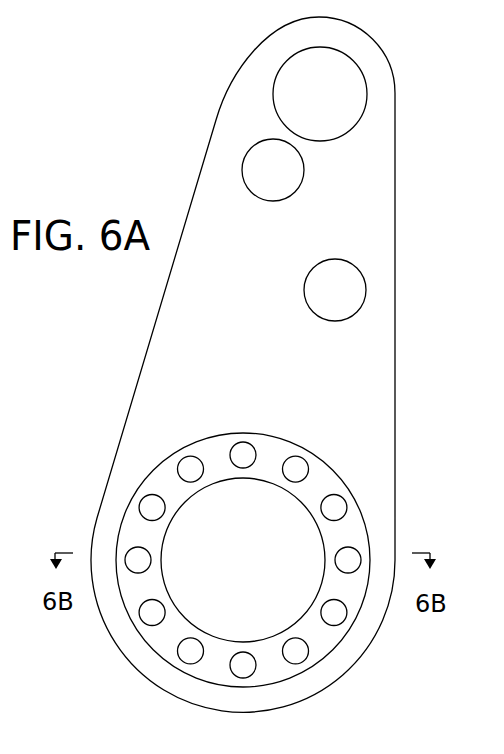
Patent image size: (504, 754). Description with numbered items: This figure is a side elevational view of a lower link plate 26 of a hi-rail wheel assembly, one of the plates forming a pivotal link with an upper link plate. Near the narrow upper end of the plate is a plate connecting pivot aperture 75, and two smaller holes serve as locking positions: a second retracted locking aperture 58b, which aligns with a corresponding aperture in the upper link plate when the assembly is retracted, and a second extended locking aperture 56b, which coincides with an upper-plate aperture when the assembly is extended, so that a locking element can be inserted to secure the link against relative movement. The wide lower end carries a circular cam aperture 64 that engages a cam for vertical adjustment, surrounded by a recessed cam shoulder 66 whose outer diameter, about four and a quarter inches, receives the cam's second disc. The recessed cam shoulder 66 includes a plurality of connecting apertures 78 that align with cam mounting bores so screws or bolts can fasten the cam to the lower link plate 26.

The lower link plate 26 is at (187, 311).
The plate connecting pivot aperture 75 is at (328, 98).
The second retracted locking aperture 58b is at (268, 170).
The second extended locking aperture 56b is at (327, 275).
The cam aperture 64 is at (223, 547).
The recessed cam shoulder 66 is at (217, 665).
The connecting apertures 78 is at (337, 613).